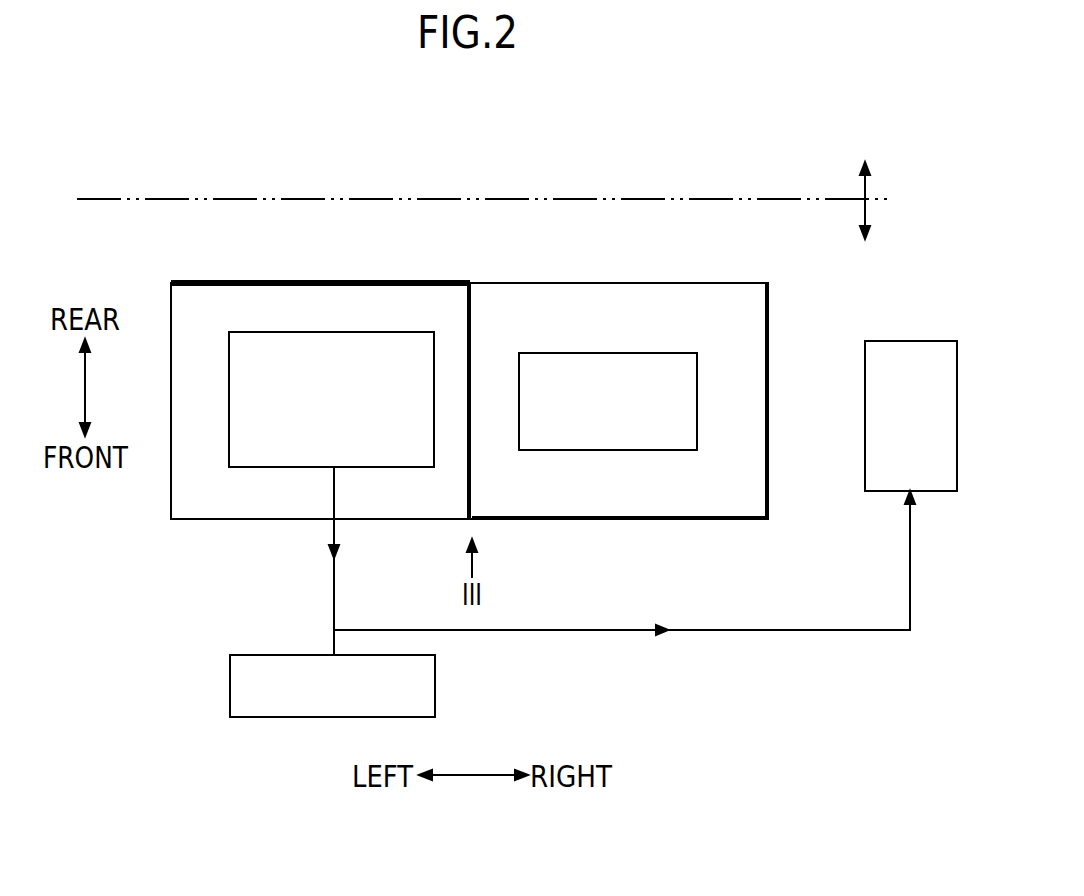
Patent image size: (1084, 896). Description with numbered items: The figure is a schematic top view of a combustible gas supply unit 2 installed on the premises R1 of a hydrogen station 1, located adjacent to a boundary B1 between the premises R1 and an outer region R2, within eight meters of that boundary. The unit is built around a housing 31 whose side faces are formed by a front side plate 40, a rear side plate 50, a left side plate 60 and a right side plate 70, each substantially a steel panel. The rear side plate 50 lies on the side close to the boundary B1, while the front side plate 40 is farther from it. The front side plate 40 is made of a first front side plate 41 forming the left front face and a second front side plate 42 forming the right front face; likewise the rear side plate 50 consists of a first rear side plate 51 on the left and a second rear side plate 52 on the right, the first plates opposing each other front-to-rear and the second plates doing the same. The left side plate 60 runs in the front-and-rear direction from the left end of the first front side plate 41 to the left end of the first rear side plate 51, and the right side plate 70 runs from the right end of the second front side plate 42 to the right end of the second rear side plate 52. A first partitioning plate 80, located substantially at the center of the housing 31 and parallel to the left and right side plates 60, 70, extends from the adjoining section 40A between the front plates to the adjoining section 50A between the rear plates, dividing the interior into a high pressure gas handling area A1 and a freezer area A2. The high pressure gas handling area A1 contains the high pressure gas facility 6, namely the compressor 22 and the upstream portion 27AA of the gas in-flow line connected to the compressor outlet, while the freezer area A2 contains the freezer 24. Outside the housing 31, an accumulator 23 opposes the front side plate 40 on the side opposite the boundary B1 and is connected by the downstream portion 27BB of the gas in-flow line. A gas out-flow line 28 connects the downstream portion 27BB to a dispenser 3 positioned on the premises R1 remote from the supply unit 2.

The hydrogen station 1 is at (920, 186).
The combustible gas supply unit 2 is at (810, 331).
The dispenser 3 is at (925, 341).
The high pressure gas facility 6 is at (268, 481).
The compressor 22 is at (229, 432).
The accumulator 23 is at (230, 683).
The freezer 24 is at (678, 452).
The upstream portion of the gas in-flow line 27AA is at (334, 480).
The downstream portion of the gas in-flow line 27BB is at (334, 605).
The gas out-flow line 28 is at (805, 631).
The housing 31 is at (768, 488).
The front side plate 40 is at (469, 563).
The adjoining section between the first and second front side plates 40A is at (488, 504).
The first front side plate 41 is at (380, 520).
The second front side plate 42 is at (645, 520).
The rear side plate 50 is at (469, 250).
The adjoining section between the first and second rear side plates 50A is at (486, 296).
The first rear side plate 51 is at (330, 280).
The second rear side plate 52 is at (650, 282).
The left side plate 60 is at (171, 385).
The right side plate 70 is at (768, 415).
The first partitioning plate 80 is at (467, 337).
The high pressure gas handling area A1 is at (255, 490).
The freezer area A2 is at (700, 322).
The boundary B1 is at (283, 199).
The premises R1 is at (864, 237).
The outer region of the premises R2 is at (864, 165).